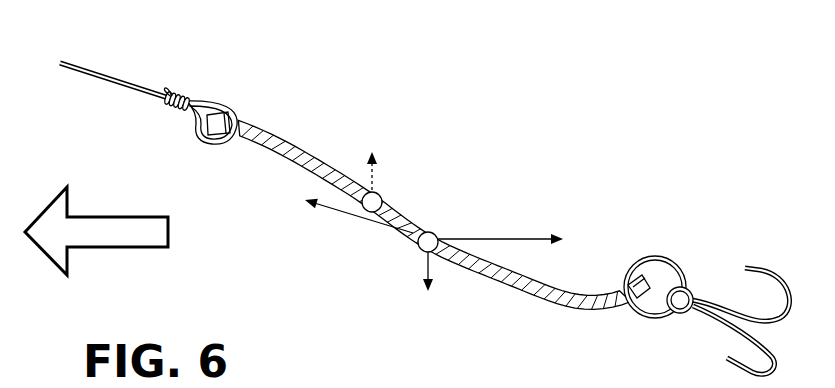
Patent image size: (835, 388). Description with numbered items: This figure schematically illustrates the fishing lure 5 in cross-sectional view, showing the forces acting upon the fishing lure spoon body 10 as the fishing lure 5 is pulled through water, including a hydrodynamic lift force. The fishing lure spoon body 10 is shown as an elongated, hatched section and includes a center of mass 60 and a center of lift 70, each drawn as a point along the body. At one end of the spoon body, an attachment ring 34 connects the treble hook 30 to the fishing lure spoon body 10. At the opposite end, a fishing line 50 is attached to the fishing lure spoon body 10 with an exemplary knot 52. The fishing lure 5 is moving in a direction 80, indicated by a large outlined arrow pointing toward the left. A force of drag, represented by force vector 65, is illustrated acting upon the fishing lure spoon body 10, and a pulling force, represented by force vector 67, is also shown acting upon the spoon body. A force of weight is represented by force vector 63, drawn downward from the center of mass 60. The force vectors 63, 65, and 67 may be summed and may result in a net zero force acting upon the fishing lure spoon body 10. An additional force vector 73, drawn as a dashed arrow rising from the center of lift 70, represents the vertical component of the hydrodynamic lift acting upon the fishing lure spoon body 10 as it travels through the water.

The fishing lure 5 is at (558, 108).
The fishing lure spoon body 10 is at (298, 147).
The treble hook 30 is at (752, 272).
The attachment ring 34 is at (655, 254).
The fishing line 50 is at (106, 78).
The knot 52 is at (177, 98).
The center of mass 60 is at (427, 231).
The force vector 63 is at (423, 270).
The force vector 65 is at (488, 236).
The force vector 67 is at (348, 218).
The center of lift 70 is at (377, 187).
The force vector 73 is at (373, 186).
The direction 80 is at (110, 248).